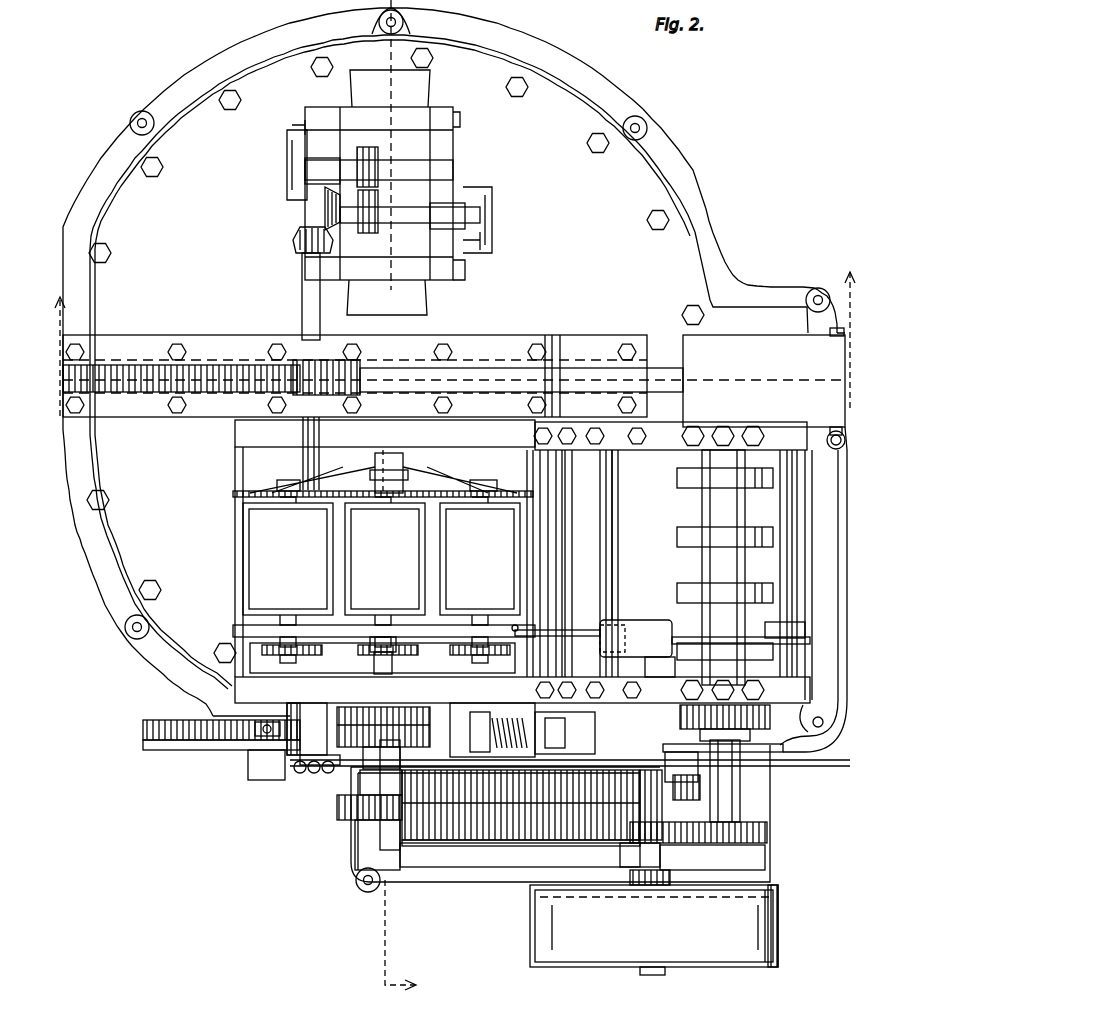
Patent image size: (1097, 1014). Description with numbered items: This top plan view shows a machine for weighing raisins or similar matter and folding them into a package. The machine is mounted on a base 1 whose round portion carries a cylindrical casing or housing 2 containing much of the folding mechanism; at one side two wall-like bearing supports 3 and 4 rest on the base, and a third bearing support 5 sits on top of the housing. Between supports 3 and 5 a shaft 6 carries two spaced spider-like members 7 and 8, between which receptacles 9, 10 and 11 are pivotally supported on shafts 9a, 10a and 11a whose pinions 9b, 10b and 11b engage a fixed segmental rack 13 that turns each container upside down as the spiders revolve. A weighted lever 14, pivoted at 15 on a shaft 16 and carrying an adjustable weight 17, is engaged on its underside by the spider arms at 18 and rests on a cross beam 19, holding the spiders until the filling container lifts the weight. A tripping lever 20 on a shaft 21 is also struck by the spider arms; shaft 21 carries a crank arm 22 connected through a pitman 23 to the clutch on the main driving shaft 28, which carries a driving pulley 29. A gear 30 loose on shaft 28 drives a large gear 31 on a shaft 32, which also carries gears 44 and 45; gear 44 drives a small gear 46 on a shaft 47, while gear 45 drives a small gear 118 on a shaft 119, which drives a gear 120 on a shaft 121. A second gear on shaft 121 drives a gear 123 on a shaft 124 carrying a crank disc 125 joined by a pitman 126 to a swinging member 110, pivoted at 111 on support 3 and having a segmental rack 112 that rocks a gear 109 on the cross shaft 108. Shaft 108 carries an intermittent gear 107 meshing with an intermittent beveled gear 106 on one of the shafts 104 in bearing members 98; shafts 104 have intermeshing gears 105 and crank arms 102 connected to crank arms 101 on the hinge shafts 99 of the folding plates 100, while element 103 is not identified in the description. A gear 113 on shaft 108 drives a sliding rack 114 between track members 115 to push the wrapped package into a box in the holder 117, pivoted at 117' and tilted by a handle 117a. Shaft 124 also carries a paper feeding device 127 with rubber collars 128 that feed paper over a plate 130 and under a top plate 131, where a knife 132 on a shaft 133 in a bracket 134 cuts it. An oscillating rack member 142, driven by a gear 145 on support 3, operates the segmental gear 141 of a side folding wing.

The base 1 is at (160, 105).
The cylindrical casing 2 is at (620, 182).
The bearing support 3 is at (814, 690).
The bearing support 4 is at (795, 858).
The bearing support 5 is at (812, 472).
The shaft 6 is at (395, 462).
The spider-like member 7 is at (455, 484).
The spider-like member 8 is at (275, 630).
The receptacle 9 is at (288, 561).
The shaft 9a is at (288, 623).
The pinion 9b is at (292, 658).
The receptacle 10 is at (385, 561).
The shaft 10a is at (380, 623).
The pinion 10b is at (374, 658).
The receptacle 11 is at (480, 561).
The shaft 11a is at (480, 623).
The pinion 11b is at (480, 658).
The segmental rack 13 is at (256, 659).
The weighted lever 14 is at (675, 645).
The pivot 15 is at (790, 640).
The shaft 16 is at (790, 600).
The weight 17 is at (636, 630).
The engagement point 18 is at (522, 636).
The cross beam 19 is at (562, 604).
The tripping lever 20 is at (515, 625).
The shaft 21 is at (620, 595).
The crank arm 22 is at (660, 667).
The pitman 23 is at (642, 690).
The main driving shaft 28 is at (652, 982).
The driving pulley 29 is at (654, 926).
The gear 30 is at (700, 795).
The large gear 31 is at (410, 790).
The shaft 32 is at (515, 880).
The gear 44 is at (450, 797).
The gear 45 is at (462, 857).
The small gear 46 is at (377, 803).
The shaft 47 is at (375, 787).
The bearing member 98 is at (338, 118).
The bearing shaft 99 is at (453, 120).
The folding plate 100 is at (388, 192).
The crank arm 101 is at (305, 128).
The crank arm 102 is at (305, 170).
The bolt 103 is at (292, 157).
The shaft 104 is at (410, 168).
The intermeshing gear 105 is at (368, 170).
The intermittent beveled gear 106 is at (325, 208).
The intermittent gear 107 is at (295, 247).
The shaft 108 is at (303, 310).
The gear 109 is at (282, 727).
The swinging member 110 is at (237, 745).
The pivot 111 is at (300, 715).
The segmental rack 112 is at (200, 732).
The gear 113 is at (293, 368).
The sliding rack 114 is at (135, 375).
The track member 115 is at (552, 405).
The box holder 117 is at (764, 381).
The pivot 117' is at (823, 345).
The handle 117a is at (836, 431).
The small gear 118 is at (640, 800).
The shaft 119 is at (615, 800).
The gear 120 is at (770, 831).
The shaft 121 is at (720, 772).
The gear 123 is at (760, 718).
The shaft 124 is at (735, 757).
The crank disc 125 is at (770, 750).
The pitman 126 is at (330, 765).
The paper feeding device 127 is at (715, 562).
The rubber collar 128 is at (695, 540).
The plate 130 is at (345, 463).
The top plate 131 is at (570, 546).
The knife 132 is at (527, 473).
The shaft 133 is at (543, 733).
The bracket member 134 is at (490, 712).
The segmental gear 141 is at (432, 740).
The oscillating rack member 142 is at (378, 742).
The gear 145 is at (360, 712).